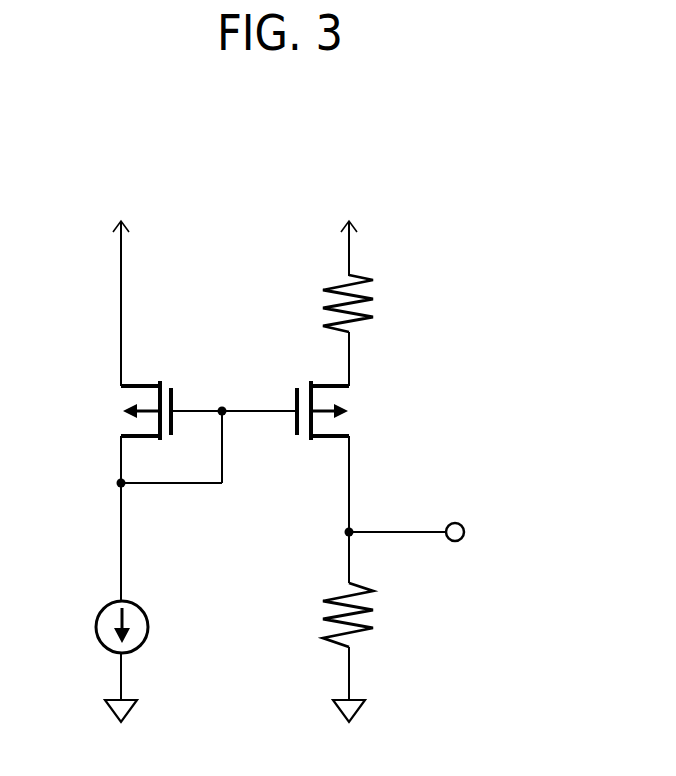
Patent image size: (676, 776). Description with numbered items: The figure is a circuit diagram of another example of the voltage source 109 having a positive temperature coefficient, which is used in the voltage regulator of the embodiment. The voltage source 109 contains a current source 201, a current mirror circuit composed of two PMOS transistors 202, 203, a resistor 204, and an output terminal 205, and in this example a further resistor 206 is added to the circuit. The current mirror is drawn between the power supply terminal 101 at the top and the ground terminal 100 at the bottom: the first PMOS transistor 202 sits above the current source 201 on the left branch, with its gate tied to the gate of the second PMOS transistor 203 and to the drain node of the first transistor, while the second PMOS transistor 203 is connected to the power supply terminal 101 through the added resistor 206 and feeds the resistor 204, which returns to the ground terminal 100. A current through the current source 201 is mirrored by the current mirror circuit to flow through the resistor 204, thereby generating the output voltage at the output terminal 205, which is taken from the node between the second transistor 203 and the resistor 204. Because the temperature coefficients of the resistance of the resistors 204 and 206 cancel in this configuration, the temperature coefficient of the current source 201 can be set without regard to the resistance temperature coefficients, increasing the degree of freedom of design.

The voltage source 109 is at (222, 190).
The power supply terminal 101 is at (350, 204).
The ground terminal 100 is at (348, 740).
The current source 201 is at (102, 608).
The PMOS transistor 202 is at (121, 411).
The PMOS transistor 203 is at (352, 412).
The resistor 204 is at (323, 620).
The output terminal 205 is at (462, 542).
The resistor 206 is at (375, 297).